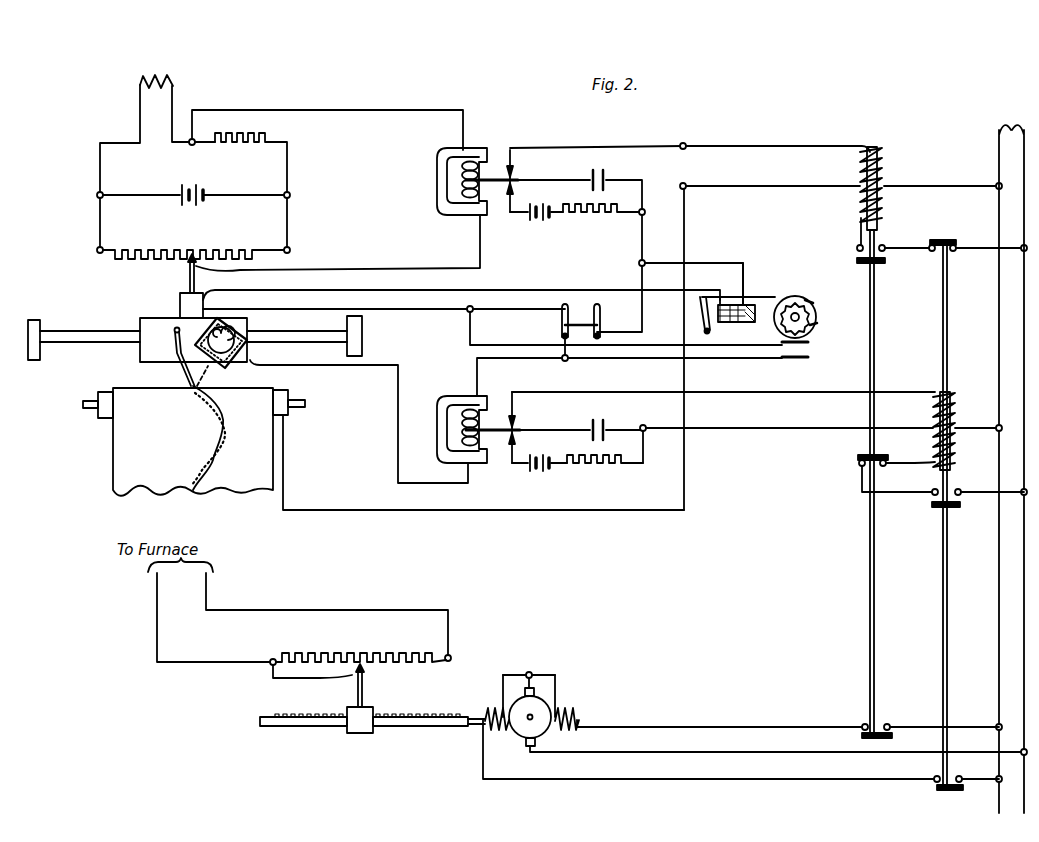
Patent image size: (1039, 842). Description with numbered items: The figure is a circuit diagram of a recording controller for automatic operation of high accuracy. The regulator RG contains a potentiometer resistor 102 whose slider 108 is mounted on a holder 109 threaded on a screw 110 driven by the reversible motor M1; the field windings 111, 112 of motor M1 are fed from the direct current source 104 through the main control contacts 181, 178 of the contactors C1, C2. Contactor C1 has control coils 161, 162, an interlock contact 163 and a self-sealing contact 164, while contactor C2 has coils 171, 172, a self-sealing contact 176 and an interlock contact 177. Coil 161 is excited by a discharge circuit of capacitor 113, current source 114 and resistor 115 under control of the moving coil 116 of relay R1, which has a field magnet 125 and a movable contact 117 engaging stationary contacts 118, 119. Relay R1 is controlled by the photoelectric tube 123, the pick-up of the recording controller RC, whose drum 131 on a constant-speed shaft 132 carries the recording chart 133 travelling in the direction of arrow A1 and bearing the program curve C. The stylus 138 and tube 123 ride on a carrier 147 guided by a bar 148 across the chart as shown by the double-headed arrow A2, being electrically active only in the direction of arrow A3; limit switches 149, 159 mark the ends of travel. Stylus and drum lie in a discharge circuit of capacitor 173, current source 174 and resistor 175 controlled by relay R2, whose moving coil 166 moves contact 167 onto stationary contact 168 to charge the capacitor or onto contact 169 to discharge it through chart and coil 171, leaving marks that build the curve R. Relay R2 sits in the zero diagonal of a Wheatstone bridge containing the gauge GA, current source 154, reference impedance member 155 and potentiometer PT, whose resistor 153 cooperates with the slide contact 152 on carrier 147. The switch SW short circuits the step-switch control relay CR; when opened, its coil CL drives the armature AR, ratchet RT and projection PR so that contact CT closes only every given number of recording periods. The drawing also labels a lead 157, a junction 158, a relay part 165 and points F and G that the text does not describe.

The potentiometer resistor 102 is at (341, 661).
The direct current source 104 is at (1009, 462).
The slider 108 is at (355, 679).
The holder 109 is at (352, 734).
The screw 110 is at (430, 716).
The field winding 111 is at (579, 713).
The field winding 112 is at (485, 731).
The capacitor 113 is at (601, 421).
The current source 114 is at (553, 471).
The resistor 115 is at (601, 465).
The moving coil 116 is at (468, 438).
The movable contact 117 is at (498, 432).
The stationary contact 118 is at (516, 439).
The stationary contact 119 is at (516, 418).
The photoelectric tube 123 is at (250, 350).
The field magnet 125 is at (441, 424).
The drum 131 is at (288, 413).
The shaft 132 is at (88, 412).
The recording chart 133 is at (233, 490).
The stylus 138 is at (180, 376).
The carrier 147 is at (142, 326).
The bar 148 is at (65, 346).
The limit switch 149 is at (33, 360).
The slide contact 152 is at (189, 263).
The potentiometer resistor 153 is at (200, 250).
The current source 154 is at (205, 193).
The reference impedance member 155 is at (268, 136).
The gauge lead 157 is at (275, 110).
The junction 158 is at (195, 148).
The limit switch 159 is at (363, 347).
The control coil 161 is at (955, 395).
The self-holding coil 162 is at (957, 436).
The interlock contact 163 is at (948, 240).
The self-sealing contact 164 is at (958, 508).
The relay coil 165 is at (443, 180).
The moving coil 166 is at (467, 187).
The contact 167 is at (510, 165).
The stationary contact 168 is at (515, 188).
The stationary contact 169 is at (515, 168).
The control coil 171 is at (882, 156).
The coil 172 is at (880, 210).
The capacitor 173 is at (604, 175).
The current source 174 is at (533, 221).
The resistor 175 is at (583, 214).
The self-sealing contact 176 is at (880, 264).
The interlock contact 177 is at (860, 458).
The main control contact 178 is at (862, 738).
The main control contact 181 is at (937, 790).
The gauge GA is at (140, 84).
The potentiometer PT is at (146, 278).
The recording controller RC is at (100, 480).
The relay R1 is at (468, 393).
The relay R2 is at (450, 146).
The switch SW is at (560, 326).
The terminal F is at (686, 143).
The terminal G is at (688, 186).
The armature AR is at (757, 297).
The control relay CR is at (815, 288).
The coil CL is at (725, 323).
The ratchet RT is at (814, 303).
The projection PR is at (818, 324).
The contact CT is at (810, 345).
The control contactor C1 is at (970, 369).
The control contactor C2 is at (902, 374).
The regulator RG is at (408, 701).
The reversible motor M1 is at (520, 735).
The arrow A1 is at (133, 445).
The double-headed arrow A2 is at (62, 297).
The arrow A3 is at (128, 400).
The curve R is at (213, 439).
The program curve C is at (206, 456).